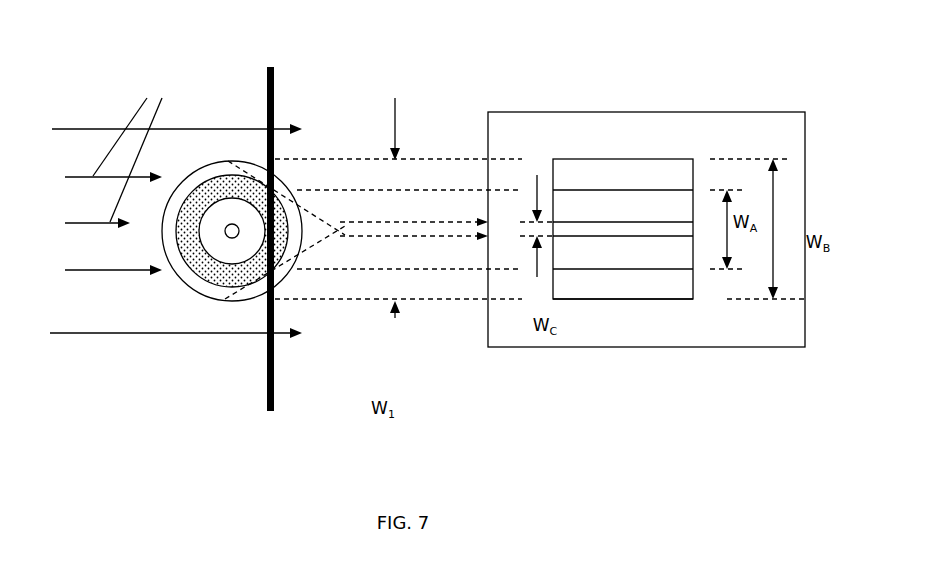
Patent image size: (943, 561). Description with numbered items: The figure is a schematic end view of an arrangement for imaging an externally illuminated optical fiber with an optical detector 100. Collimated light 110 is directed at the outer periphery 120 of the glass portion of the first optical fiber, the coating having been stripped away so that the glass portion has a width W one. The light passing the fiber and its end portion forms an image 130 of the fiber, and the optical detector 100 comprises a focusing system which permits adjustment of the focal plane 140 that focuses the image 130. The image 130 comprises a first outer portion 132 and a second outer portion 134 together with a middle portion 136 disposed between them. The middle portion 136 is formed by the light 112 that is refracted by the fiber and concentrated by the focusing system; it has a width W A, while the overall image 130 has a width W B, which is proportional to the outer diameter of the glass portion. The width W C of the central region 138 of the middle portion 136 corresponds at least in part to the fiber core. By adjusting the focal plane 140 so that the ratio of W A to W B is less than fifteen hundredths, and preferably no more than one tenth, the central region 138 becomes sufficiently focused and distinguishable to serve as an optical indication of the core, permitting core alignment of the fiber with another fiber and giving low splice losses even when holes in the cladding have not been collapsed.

The optical detector 100 is at (552, 110).
The collimated light 110 is at (80, 129).
The refracted light 112 is at (303, 207).
The outer periphery 120 is at (178, 282).
The image 130 is at (677, 256).
The first outer portion 132 is at (647, 175).
The second outer portion 134 is at (647, 283).
The middle portion 136 is at (648, 248).
The central region 138 is at (590, 230).
The focal plane 140 is at (277, 110).